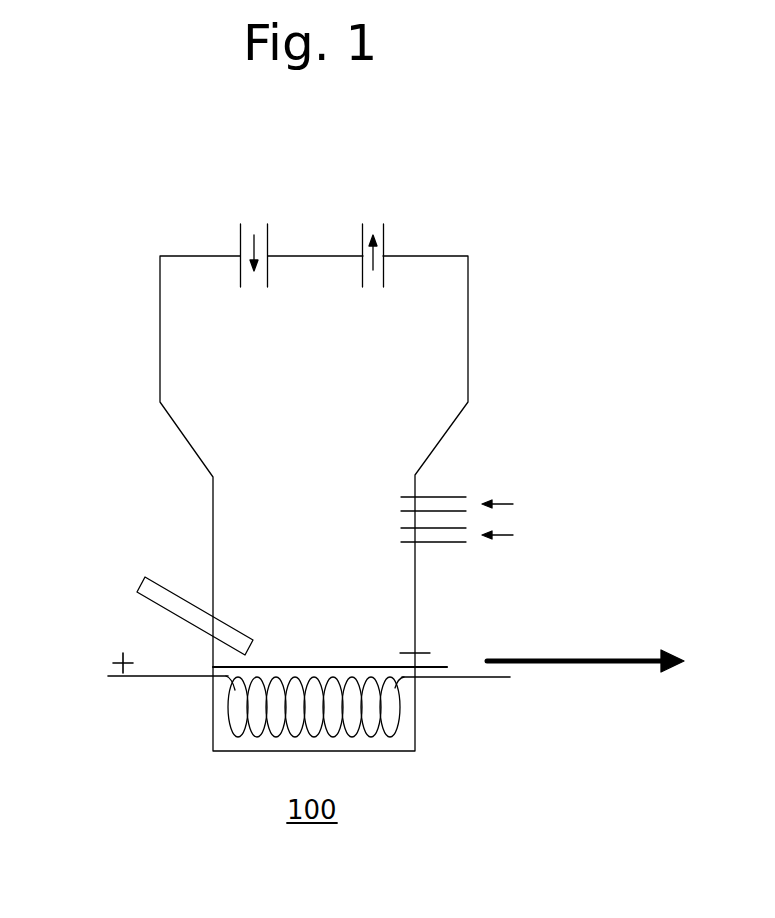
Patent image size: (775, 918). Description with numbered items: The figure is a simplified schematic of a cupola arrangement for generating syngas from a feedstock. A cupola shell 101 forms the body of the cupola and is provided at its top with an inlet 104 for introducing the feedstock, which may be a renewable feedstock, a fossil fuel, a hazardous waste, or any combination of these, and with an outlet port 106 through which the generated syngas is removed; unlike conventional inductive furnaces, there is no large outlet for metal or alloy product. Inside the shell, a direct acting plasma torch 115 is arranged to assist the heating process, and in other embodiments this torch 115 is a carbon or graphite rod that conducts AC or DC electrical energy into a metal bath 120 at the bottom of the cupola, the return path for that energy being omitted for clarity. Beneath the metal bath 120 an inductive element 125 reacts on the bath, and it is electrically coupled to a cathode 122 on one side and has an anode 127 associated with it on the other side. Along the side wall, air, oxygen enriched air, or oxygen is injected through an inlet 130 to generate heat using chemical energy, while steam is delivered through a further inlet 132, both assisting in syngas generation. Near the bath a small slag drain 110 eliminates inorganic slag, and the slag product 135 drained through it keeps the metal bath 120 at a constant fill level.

The cupola shell 101 is at (160, 332).
The inlet 104 is at (240, 232).
The outlet port 106 is at (383, 230).
The slag drain 110 is at (433, 653).
The plasma torch 115 is at (137, 592).
The metal bath 120 is at (305, 668).
The cathode 122 is at (123, 676).
The inductive element 125 is at (233, 732).
The anode 127 is at (493, 677).
The inlet 130 is at (457, 542).
The inlet 132 is at (457, 497).
The slag product 135 is at (580, 660).